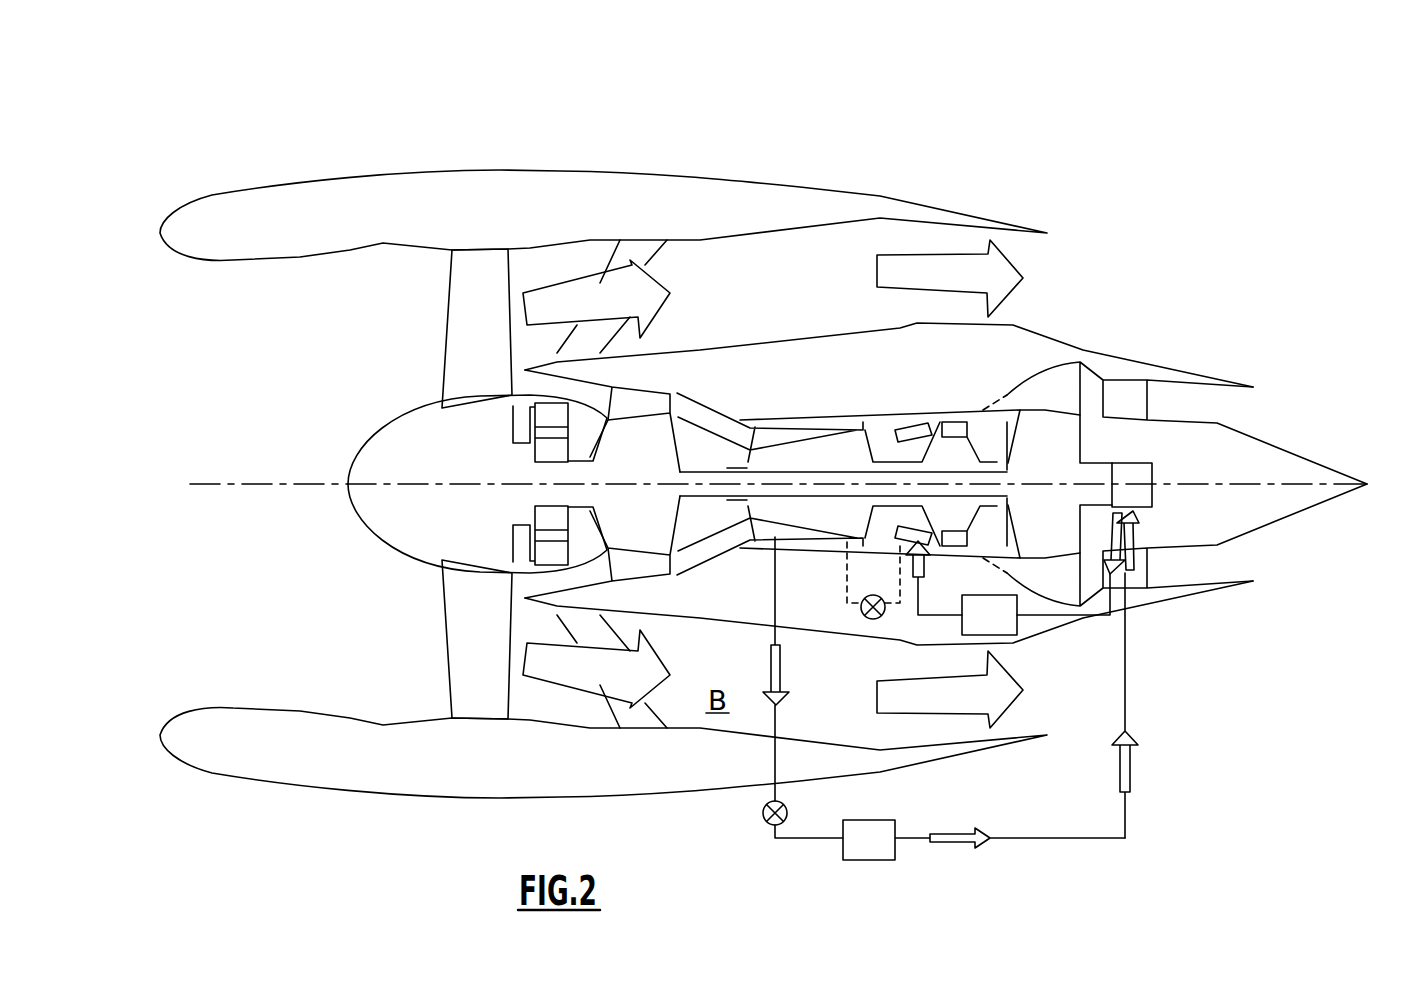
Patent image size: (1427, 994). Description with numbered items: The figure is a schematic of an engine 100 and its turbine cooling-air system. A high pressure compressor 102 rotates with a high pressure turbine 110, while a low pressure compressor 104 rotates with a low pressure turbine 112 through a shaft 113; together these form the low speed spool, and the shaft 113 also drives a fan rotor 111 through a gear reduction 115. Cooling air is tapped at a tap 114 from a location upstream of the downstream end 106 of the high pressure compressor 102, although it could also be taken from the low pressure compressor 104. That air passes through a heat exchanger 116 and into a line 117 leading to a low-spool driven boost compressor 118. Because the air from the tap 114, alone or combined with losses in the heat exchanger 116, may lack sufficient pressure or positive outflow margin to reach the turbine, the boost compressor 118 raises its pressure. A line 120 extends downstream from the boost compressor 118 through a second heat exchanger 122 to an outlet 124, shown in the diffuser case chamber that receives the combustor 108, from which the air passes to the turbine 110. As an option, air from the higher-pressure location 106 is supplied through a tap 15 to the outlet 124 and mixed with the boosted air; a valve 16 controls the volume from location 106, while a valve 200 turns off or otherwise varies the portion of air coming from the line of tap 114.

The engine 100 is at (566, 134).
The high pressure compressor 102 is at (772, 437).
The low pressure compressor 104 is at (648, 410).
The downstream end of the high pressure compressor 106 is at (863, 438).
The combustor 108 is at (897, 430).
The high pressure turbine 110 is at (957, 432).
The fan rotor 111 is at (444, 371).
The low pressure turbine 112 is at (1043, 390).
The shaft 113 is at (1000, 484).
The tap 114 is at (778, 540).
The gear reduction 115 is at (543, 515).
The heat exchanger 116 is at (880, 827).
The line 117 is at (1127, 662).
The boost compressor 118 is at (1140, 497).
The line 120 is at (1055, 617).
The second heat exchanger 122 is at (997, 628).
The outlet 124 is at (930, 553).
The tap 15 is at (843, 560).
The valve 16 is at (873, 622).
The valve 200 is at (762, 806).